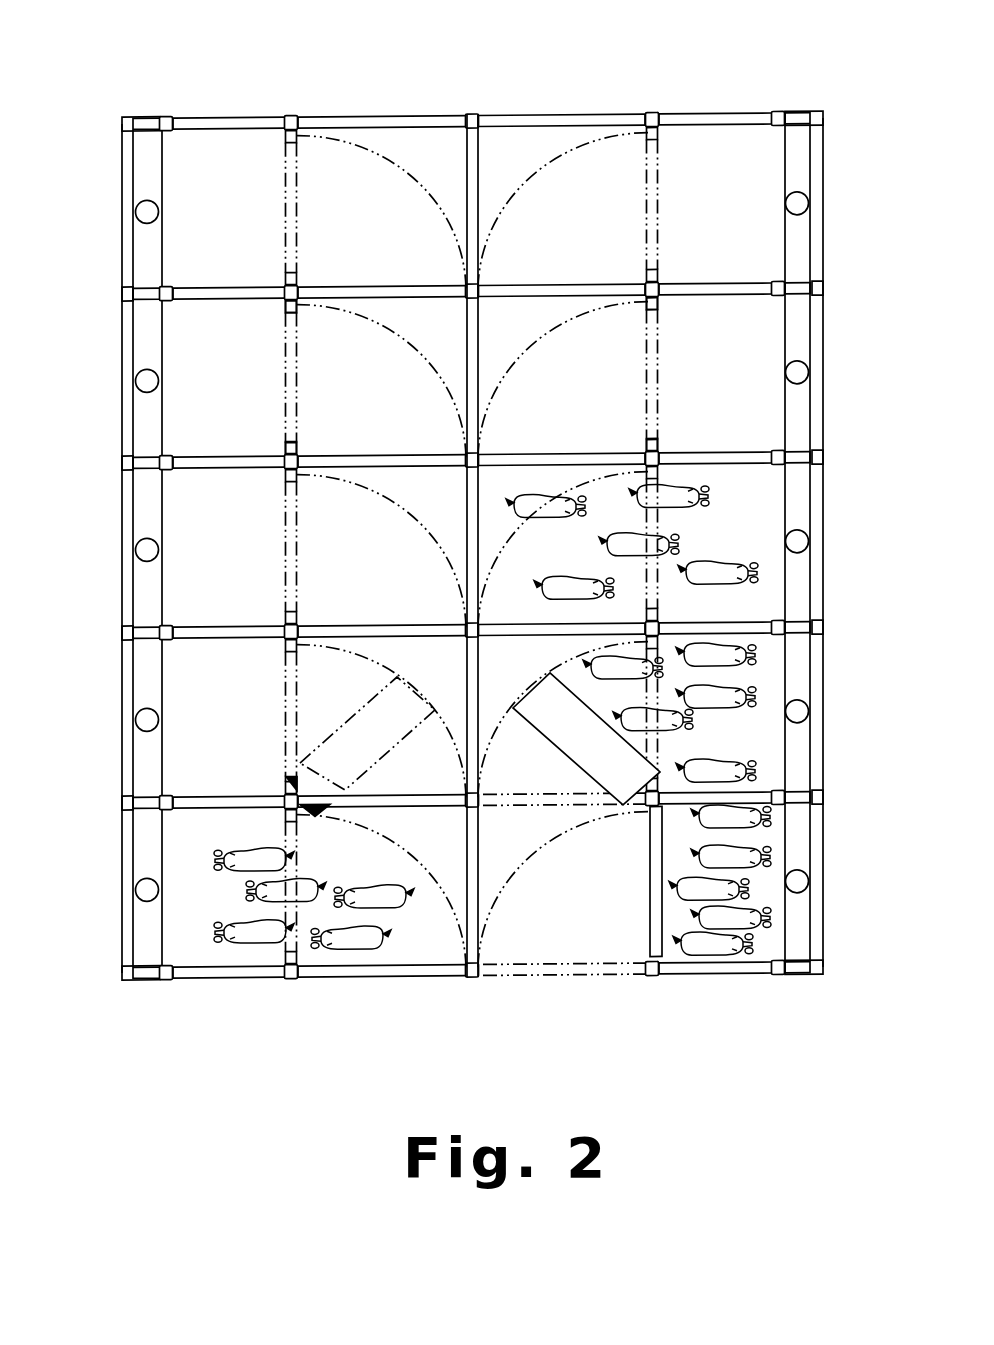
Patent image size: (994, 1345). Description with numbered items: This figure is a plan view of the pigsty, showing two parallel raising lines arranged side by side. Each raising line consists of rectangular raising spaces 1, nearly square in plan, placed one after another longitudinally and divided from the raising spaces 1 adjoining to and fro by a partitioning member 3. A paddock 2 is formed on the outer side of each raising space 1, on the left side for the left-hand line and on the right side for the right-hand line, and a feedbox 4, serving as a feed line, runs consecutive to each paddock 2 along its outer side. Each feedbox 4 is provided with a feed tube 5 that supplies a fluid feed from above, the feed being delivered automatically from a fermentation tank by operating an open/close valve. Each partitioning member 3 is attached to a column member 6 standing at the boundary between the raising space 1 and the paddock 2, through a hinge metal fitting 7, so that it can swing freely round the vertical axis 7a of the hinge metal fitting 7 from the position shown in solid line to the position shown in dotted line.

The raising space 1 is at (328, 157).
The paddock 2 is at (197, 237).
The partitioning member 3 is at (430, 121).
The feedbox 4 is at (143, 155).
The feed tube 5 is at (148, 212).
The column member 6 is at (291, 293).
The hinge metal fitting 7 is at (302, 294).
The vertical axis 7a is at (303, 460).